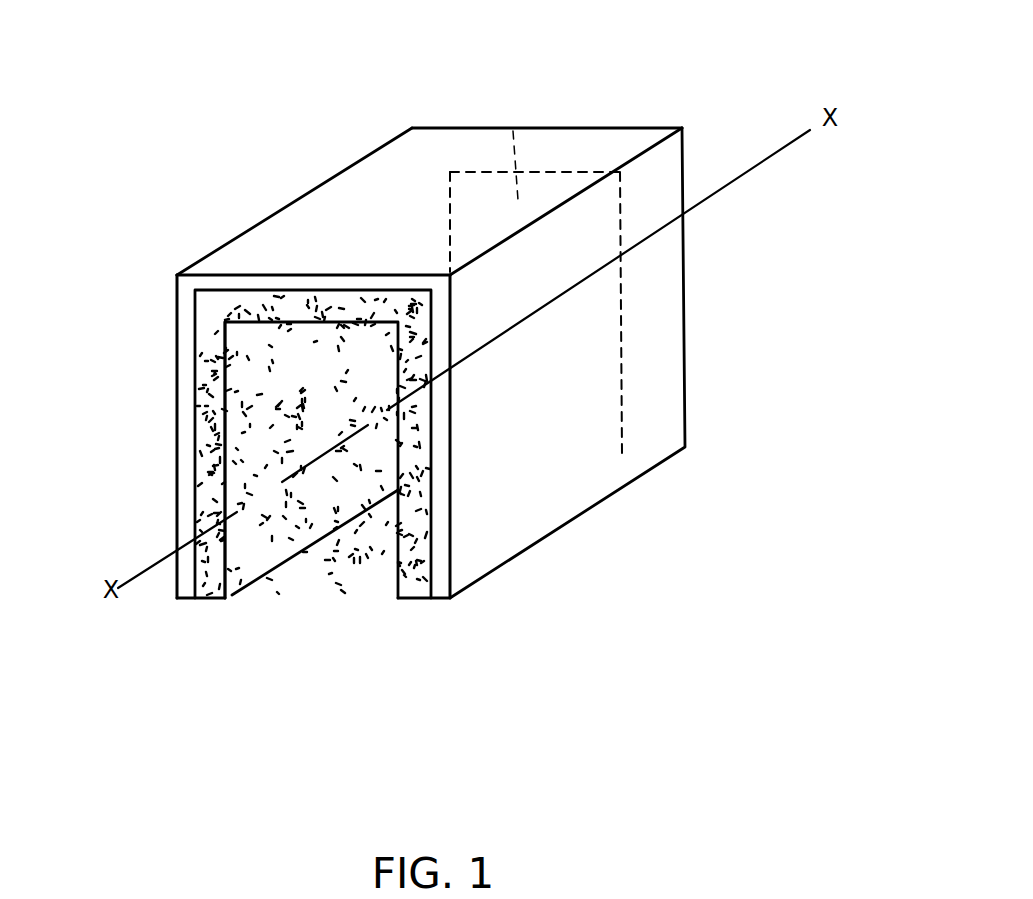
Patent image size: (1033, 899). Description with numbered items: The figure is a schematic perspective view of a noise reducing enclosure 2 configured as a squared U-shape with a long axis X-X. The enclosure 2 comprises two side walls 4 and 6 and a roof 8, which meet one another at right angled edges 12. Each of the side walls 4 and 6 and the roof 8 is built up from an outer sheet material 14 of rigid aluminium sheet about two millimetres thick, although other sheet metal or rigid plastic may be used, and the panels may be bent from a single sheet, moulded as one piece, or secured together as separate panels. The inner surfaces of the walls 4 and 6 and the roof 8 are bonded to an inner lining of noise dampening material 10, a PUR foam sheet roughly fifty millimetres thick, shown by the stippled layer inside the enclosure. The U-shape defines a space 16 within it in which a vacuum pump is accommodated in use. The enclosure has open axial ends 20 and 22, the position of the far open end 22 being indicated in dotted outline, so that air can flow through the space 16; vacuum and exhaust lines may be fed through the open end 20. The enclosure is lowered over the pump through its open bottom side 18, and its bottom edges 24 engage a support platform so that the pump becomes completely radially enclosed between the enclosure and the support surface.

The enclosure 2 is at (742, 188).
The side wall 4 is at (573, 342).
The side wall 6 is at (178, 435).
The roof 8 is at (438, 163).
The inner lining of noise dampening material 10 is at (290, 560).
The right angled edges 12 is at (258, 222).
The outer sheet material 14 is at (438, 490).
The space 16 is at (311, 460).
The open bottom side 18 is at (323, 588).
The open axial end 20 is at (302, 425).
The open axial end 22 is at (513, 130).
The bottom edges 24 is at (200, 598).